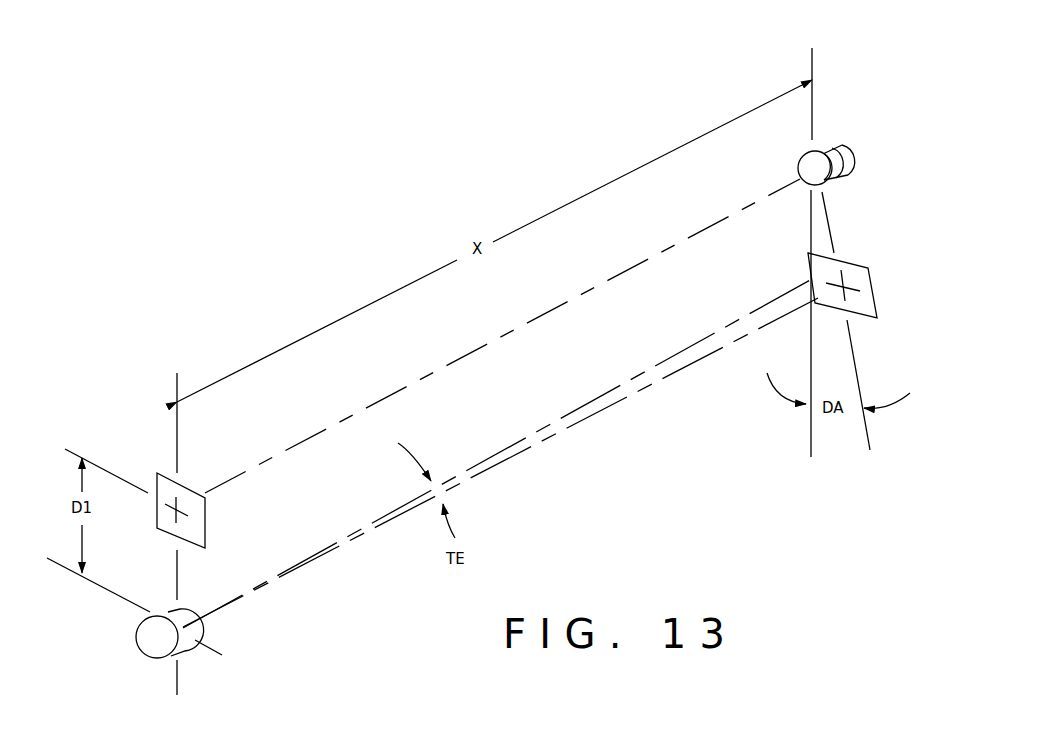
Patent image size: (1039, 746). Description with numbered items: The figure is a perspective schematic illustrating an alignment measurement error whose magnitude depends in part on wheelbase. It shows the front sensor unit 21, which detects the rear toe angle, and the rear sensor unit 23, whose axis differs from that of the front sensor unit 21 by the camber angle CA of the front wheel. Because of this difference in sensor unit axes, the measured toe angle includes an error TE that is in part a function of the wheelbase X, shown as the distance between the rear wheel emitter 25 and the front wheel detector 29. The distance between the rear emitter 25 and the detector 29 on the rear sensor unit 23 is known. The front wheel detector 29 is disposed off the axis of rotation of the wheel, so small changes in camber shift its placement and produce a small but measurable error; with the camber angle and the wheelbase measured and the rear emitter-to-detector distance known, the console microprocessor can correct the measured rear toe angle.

The front sensor unit 21 is at (847, 106).
The rear sensor unit 23 is at (143, 407).
The rear wheel emitter 25 is at (857, 157).
The front wheel detector 29 is at (875, 302).